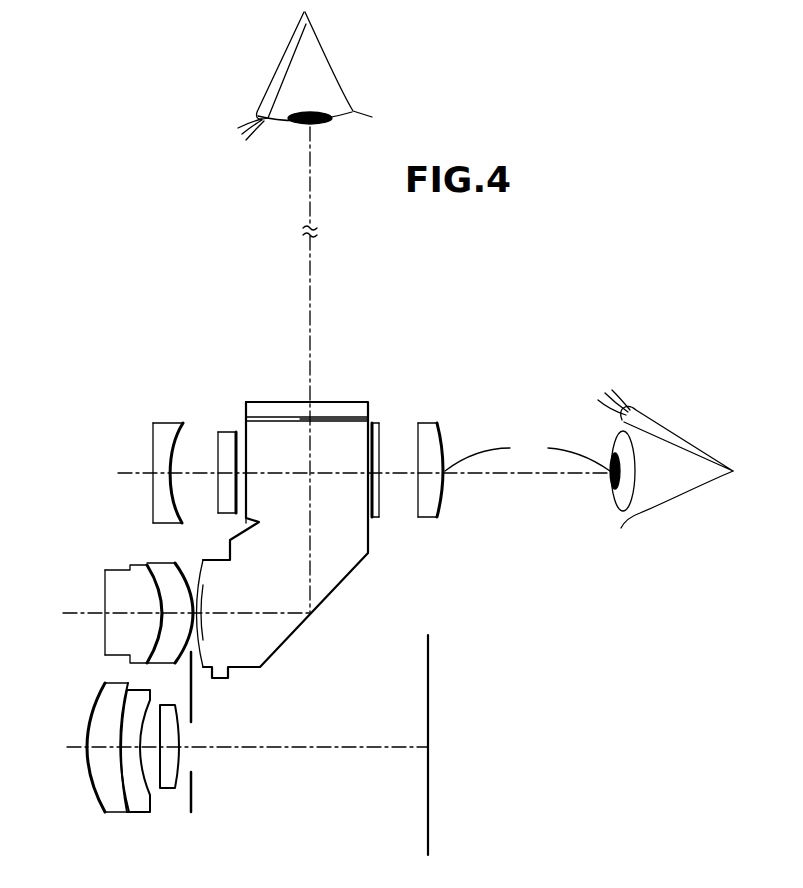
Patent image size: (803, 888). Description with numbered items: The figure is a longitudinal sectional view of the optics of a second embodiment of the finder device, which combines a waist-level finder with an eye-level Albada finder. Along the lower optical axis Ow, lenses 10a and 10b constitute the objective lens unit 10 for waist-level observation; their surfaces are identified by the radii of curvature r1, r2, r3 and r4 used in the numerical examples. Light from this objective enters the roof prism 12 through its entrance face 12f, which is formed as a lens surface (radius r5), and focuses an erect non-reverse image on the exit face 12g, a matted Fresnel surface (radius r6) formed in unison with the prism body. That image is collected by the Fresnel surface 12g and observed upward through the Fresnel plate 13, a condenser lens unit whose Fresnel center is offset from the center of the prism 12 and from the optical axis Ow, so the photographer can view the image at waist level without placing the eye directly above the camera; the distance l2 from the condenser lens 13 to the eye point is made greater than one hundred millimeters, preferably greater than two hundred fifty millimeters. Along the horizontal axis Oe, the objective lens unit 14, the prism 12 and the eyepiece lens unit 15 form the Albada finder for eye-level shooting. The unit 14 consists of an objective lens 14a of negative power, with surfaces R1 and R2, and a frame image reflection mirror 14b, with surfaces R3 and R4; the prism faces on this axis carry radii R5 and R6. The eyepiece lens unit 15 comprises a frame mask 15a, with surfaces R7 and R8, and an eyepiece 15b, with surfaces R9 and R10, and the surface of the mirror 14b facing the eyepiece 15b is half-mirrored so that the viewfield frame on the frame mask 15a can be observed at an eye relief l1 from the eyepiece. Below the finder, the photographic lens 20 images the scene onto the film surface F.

The objective lens unit 10 is at (125, 586).
The lens 10a is at (110, 602).
The lens 10b is at (144, 607).
The roof prism 12 is at (266, 512).
The entrance face 12f is at (197, 567).
The exit face 12g is at (345, 421).
The Fresnel plate 13 is at (325, 402).
The objective lens unit 14 is at (189, 394).
The objective lens 14a is at (163, 415).
The frame image reflection mirror 14b is at (222, 410).
The eyepiece lens unit 15 is at (422, 437).
The frame mask 15a is at (383, 452).
The eyepiece 15b is at (437, 461).
The photographic lens 20 is at (195, 830).
The film surface F is at (426, 838).
The eyepiece optical axis Oe is at (131, 473).
The optical axis Ow is at (70, 615).
The eye relief distance l1 is at (527, 456).
The distance l2 is at (308, 128).
The radius of curvature R1 is at (153, 430).
The radius of curvature R2 is at (180, 426).
The radius of curvature R3 is at (218, 432).
The radius of curvature R4 is at (236, 432).
The radius of curvature R5 is at (248, 430).
The radius of curvature R6 is at (369, 537).
The radius of curvature R7 is at (371, 522).
The radius of curvature R8 is at (380, 512).
The radius of curvature R9 is at (418, 508).
The radius of curvature R10 is at (446, 503).
The radius of curvature r1 is at (103, 644).
The radius of curvature r2 is at (140, 655).
The radius of curvature r3 is at (162, 662).
The radius of curvature r4 is at (185, 659).
The radius of curvature r5 is at (199, 666).
The radius of curvature r6 is at (350, 418).